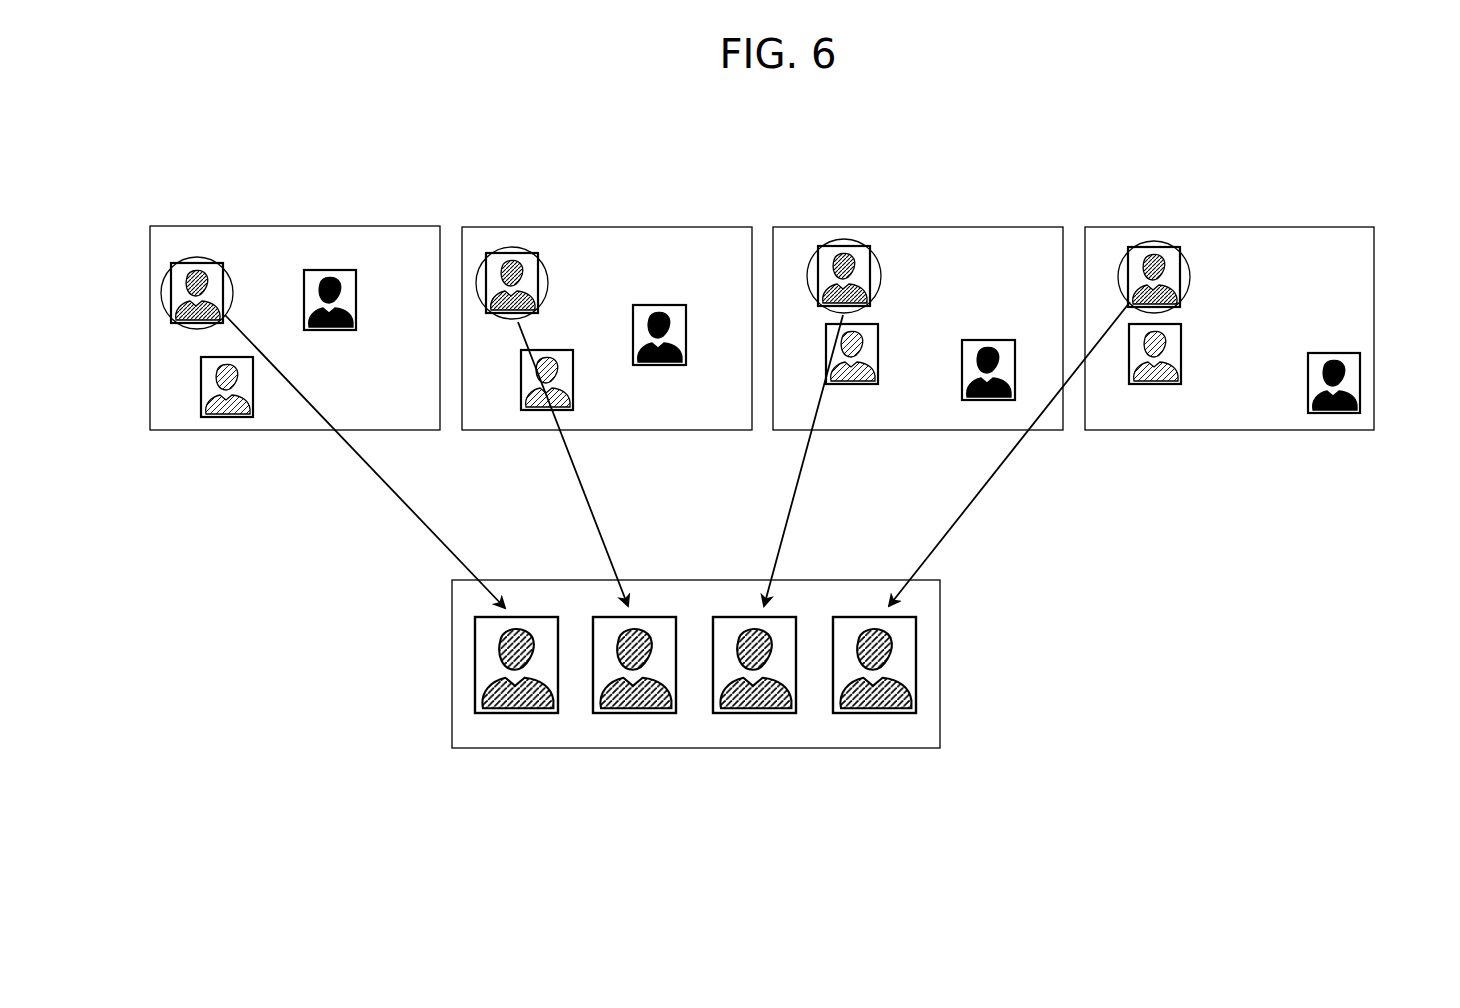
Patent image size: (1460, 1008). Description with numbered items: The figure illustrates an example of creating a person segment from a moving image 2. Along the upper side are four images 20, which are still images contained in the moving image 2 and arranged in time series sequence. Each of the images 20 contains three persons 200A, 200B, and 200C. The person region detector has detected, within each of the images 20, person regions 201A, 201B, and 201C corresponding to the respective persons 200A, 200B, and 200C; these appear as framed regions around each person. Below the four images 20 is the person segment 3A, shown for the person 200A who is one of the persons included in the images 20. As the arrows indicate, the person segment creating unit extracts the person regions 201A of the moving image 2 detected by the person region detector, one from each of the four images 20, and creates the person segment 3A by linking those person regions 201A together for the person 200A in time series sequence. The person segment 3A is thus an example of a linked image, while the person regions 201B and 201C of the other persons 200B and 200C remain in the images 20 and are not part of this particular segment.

The moving image 2 is at (1328, 114).
The image 20 is at (329, 226).
The person segment 3A is at (942, 600).
The person 200A is at (213, 293).
The person 200B is at (218, 410).
The person 200C is at (346, 330).
The person region 201A is at (210, 262).
The person region 201B is at (201, 378).
The person region 201C is at (345, 270).